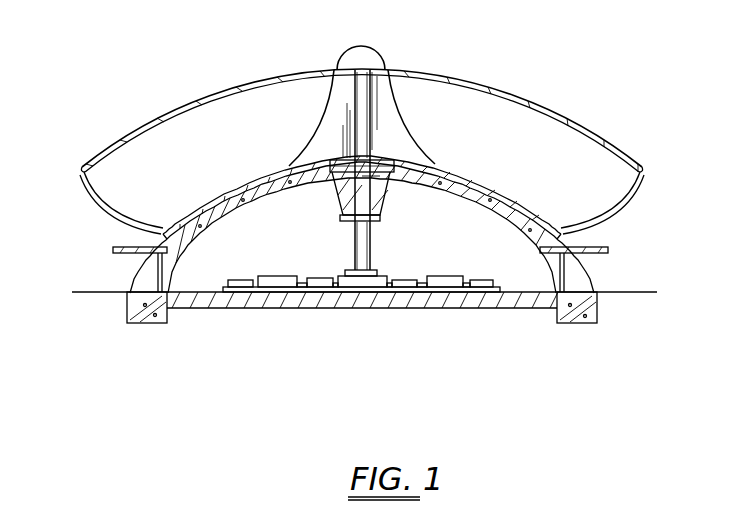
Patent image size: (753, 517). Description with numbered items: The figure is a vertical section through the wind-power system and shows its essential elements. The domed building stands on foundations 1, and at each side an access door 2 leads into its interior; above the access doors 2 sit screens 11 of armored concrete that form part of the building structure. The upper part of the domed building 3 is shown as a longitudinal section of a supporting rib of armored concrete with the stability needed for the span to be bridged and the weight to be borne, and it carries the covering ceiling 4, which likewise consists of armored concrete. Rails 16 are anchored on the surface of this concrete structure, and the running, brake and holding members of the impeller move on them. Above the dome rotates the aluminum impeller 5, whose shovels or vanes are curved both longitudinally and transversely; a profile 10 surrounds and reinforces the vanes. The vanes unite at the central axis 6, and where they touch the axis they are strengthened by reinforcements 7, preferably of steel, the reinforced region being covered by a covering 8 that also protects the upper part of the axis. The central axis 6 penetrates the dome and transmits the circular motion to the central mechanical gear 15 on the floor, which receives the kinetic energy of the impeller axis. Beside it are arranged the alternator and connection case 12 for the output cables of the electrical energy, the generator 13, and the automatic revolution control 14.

The foundations 1 is at (148, 325).
The access doors 2 is at (140, 268).
The upper part of the domed building 3 is at (508, 210).
The covering ceiling 4 is at (203, 200).
The impeller 5 is at (174, 143).
The central axis 6 is at (365, 137).
The reinforcements 7 is at (337, 103).
The covering 8 is at (360, 54).
The profile 10 is at (235, 83).
The screens 11 is at (110, 248).
The alternator and connection case 12 is at (240, 293).
The generator 13 is at (278, 288).
The automatic revolution control 14 is at (320, 288).
The central mechanical gear 15 is at (357, 284).
The rails 16 is at (247, 177).